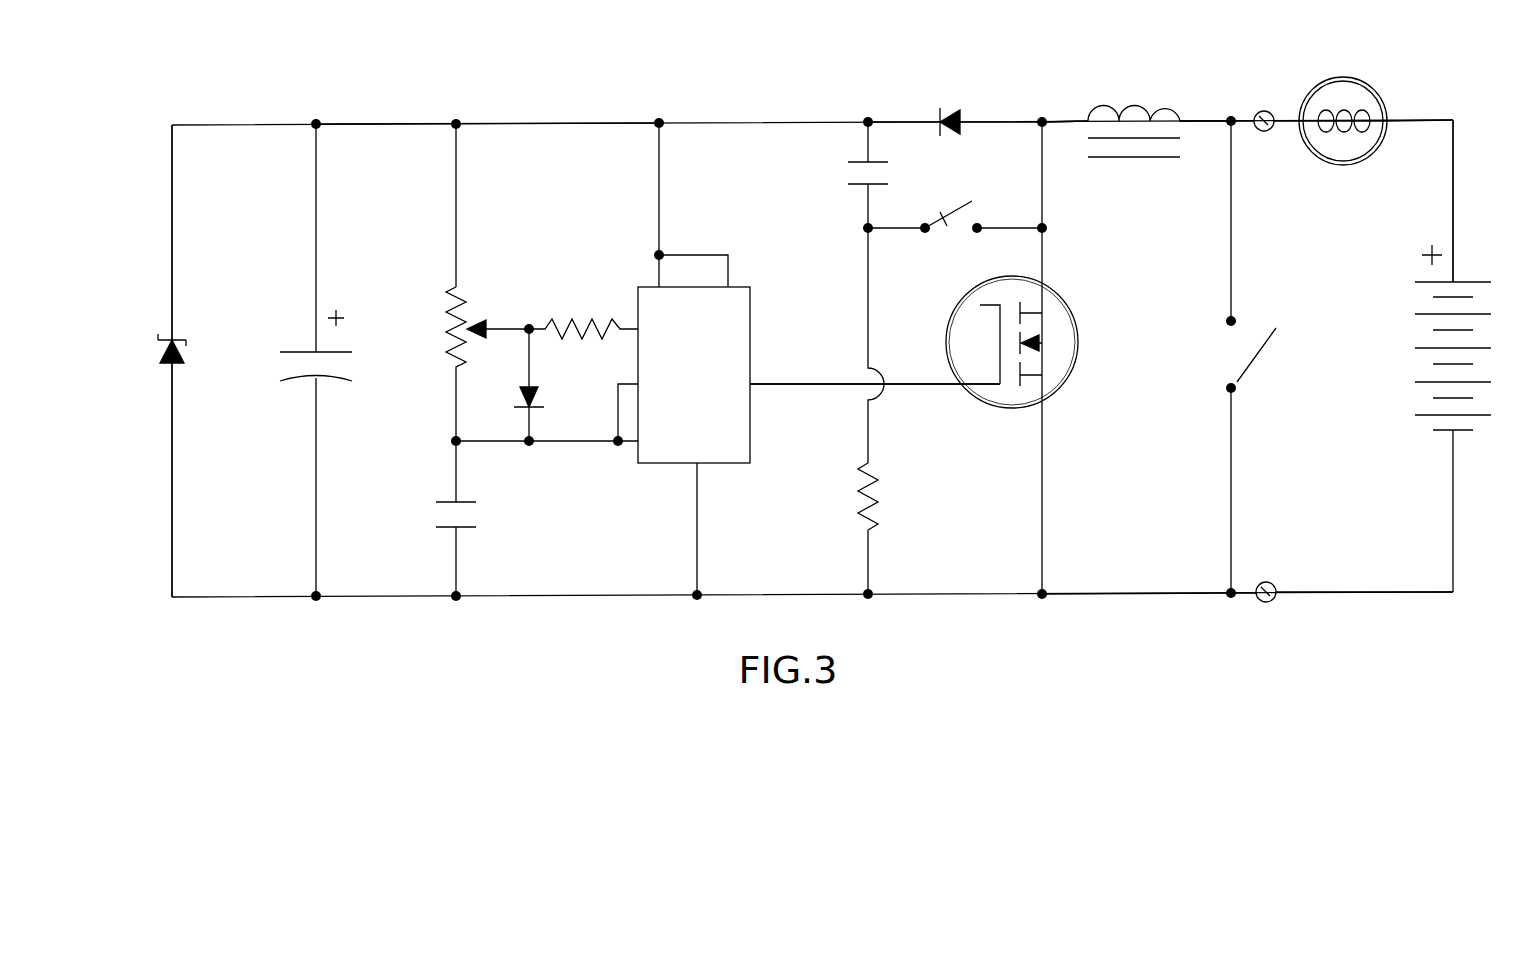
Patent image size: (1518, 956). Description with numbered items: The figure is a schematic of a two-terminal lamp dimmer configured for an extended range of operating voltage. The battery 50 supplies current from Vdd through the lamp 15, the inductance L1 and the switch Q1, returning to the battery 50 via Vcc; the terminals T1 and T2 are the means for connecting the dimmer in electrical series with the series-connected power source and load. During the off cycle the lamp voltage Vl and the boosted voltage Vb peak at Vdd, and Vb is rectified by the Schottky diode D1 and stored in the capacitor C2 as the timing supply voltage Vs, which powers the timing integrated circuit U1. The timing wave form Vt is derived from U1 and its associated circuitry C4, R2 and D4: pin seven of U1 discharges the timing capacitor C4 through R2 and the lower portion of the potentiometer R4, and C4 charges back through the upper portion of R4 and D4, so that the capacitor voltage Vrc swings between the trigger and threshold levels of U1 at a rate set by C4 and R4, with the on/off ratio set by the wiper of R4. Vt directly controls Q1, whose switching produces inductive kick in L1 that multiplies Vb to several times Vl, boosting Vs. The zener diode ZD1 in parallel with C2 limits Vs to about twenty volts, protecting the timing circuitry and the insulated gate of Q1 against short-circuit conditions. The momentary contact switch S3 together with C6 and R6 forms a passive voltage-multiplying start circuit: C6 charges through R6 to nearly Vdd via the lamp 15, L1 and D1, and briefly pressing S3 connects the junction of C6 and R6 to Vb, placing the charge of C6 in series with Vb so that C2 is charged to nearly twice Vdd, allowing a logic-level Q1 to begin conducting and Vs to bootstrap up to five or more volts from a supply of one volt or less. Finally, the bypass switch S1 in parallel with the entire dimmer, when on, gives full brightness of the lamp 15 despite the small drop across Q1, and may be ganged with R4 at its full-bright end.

The zener diode ZD1 is at (183, 348).
The storage capacitor C2 is at (282, 362).
The adjustment potentiometer R4 is at (445, 318).
The resistor R2 is at (595, 312).
The diode D4 is at (525, 382).
The timing integrated circuit U1 is at (735, 323).
The timing capacitor C4 is at (468, 512).
The start capacitor C6 is at (852, 166).
The Schottky diode D1 is at (952, 117).
The momentary contact switch S3 is at (945, 210).
The switch Q1 is at (1060, 356).
The resistor R6 is at (878, 478).
The inductance L1 is at (1135, 105).
The lamp 15 is at (1353, 97).
The terminal T1 is at (1262, 133).
The bypass switch S1 is at (1242, 352).
The battery 50 is at (1415, 402).
The terminal T2 is at (1262, 582).
The timing supply voltage Vs is at (410, 124).
The boosted voltage Vb is at (1053, 118).
The lamp voltage Vl is at (1213, 117).
The supply voltage Vdd is at (1455, 150).
The timing wave form Vt is at (853, 383).
The timing capacitor voltage Vrc is at (450, 440).
The return voltage Vcc is at (1127, 591).